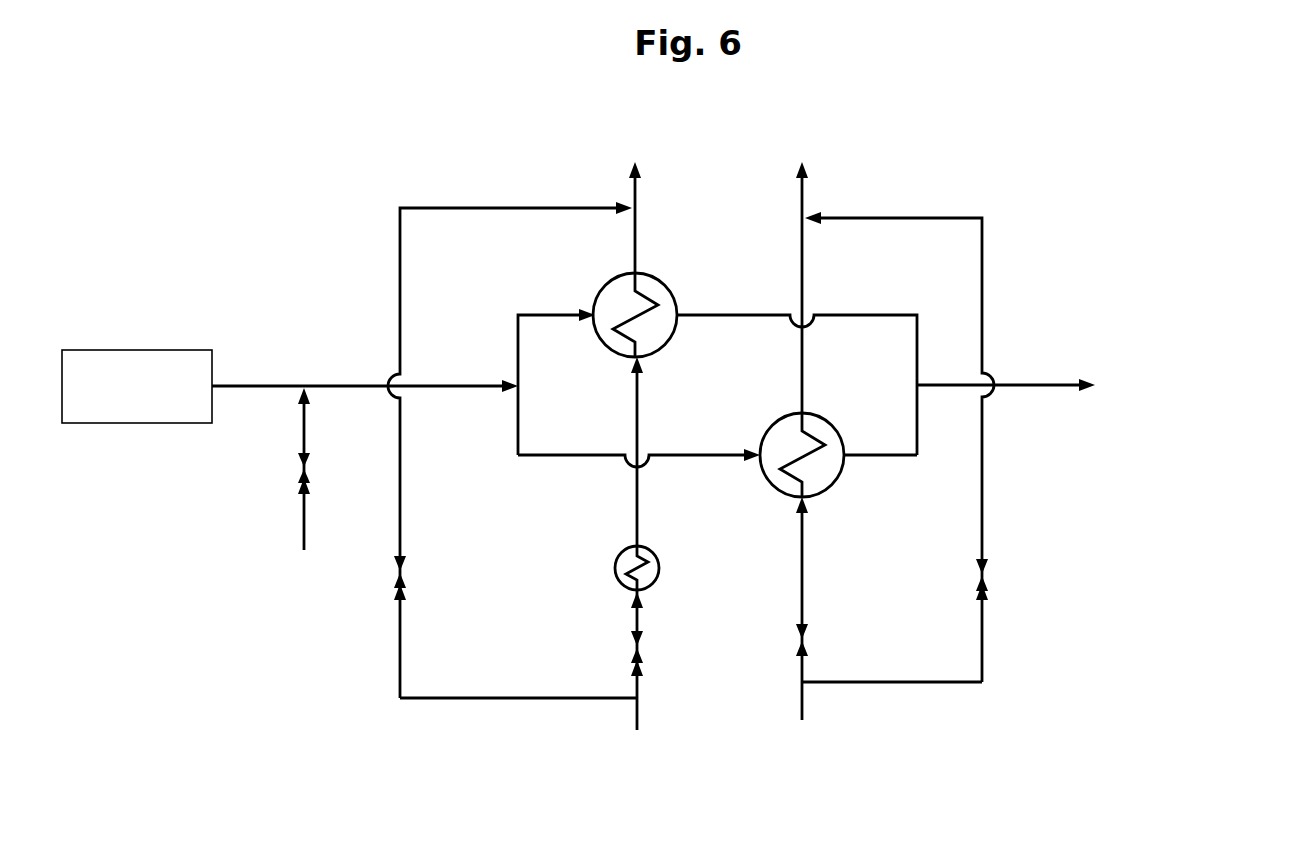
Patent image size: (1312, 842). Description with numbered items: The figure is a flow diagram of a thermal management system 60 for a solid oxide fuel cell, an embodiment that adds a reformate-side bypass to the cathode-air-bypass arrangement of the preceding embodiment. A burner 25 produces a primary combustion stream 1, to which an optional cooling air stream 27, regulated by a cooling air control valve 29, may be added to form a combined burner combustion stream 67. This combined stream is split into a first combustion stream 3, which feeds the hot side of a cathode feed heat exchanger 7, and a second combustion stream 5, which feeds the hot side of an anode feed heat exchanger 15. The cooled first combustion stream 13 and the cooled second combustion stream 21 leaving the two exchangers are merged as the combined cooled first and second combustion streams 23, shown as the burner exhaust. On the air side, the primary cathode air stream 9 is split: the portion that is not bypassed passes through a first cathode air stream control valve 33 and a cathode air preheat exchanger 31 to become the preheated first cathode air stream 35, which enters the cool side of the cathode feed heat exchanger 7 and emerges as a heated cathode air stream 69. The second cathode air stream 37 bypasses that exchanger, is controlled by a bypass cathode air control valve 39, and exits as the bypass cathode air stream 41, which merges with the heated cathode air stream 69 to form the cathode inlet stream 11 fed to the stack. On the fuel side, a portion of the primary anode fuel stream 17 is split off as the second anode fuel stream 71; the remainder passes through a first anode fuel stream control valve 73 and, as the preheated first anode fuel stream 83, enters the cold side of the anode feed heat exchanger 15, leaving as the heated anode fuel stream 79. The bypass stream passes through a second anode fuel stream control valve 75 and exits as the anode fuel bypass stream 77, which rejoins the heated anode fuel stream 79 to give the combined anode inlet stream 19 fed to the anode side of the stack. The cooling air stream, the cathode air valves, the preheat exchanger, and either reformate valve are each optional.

The primary combustion stream 1 is at (244, 378).
The first combustion stream 3 is at (543, 303).
The second combustion stream 5 is at (566, 466).
The cathode feed heat exchanger 7 is at (675, 285).
The cathode air stream 9 is at (645, 708).
The cathode inlet stream 11 is at (640, 183).
The cooled first combustion stream 13 is at (860, 305).
The anode feed heat exchanger 15 is at (772, 415).
The primary anode fuel stream 17 is at (813, 710).
The anode inlet stream 19 is at (792, 198).
The cooled second combustion stream 21 is at (893, 460).
The combined cooled first and second combustion streams 23 is at (1050, 375).
The burner 25 is at (90, 340).
The cooling air stream 27 is at (291, 522).
The cooling air control valve 29 is at (318, 473).
The cathode air preheat exchanger 31 is at (661, 582).
The first cathode air stream control valve 33 is at (650, 647).
The preheated first cathode air stream 35 is at (642, 503).
The second cathode air stream 37 is at (527, 707).
The bypass cathode air control valve 39 is at (388, 577).
The bypass cathode air stream 41 is at (408, 290).
The thermal management system 60 is at (1093, 195).
The combined burner combustion stream 67 is at (368, 377).
The heated cathode air stream 69 is at (642, 240).
The second anode fuel stream 71 is at (921, 673).
The first anode fuel stream control valve 73 is at (817, 638).
The second anode fuel stream control valve 75 is at (993, 572).
The anode fuel bypass stream 77 is at (987, 248).
The heated anode fuel stream 79 is at (792, 265).
The preheated first anode fuel stream 83 is at (812, 555).